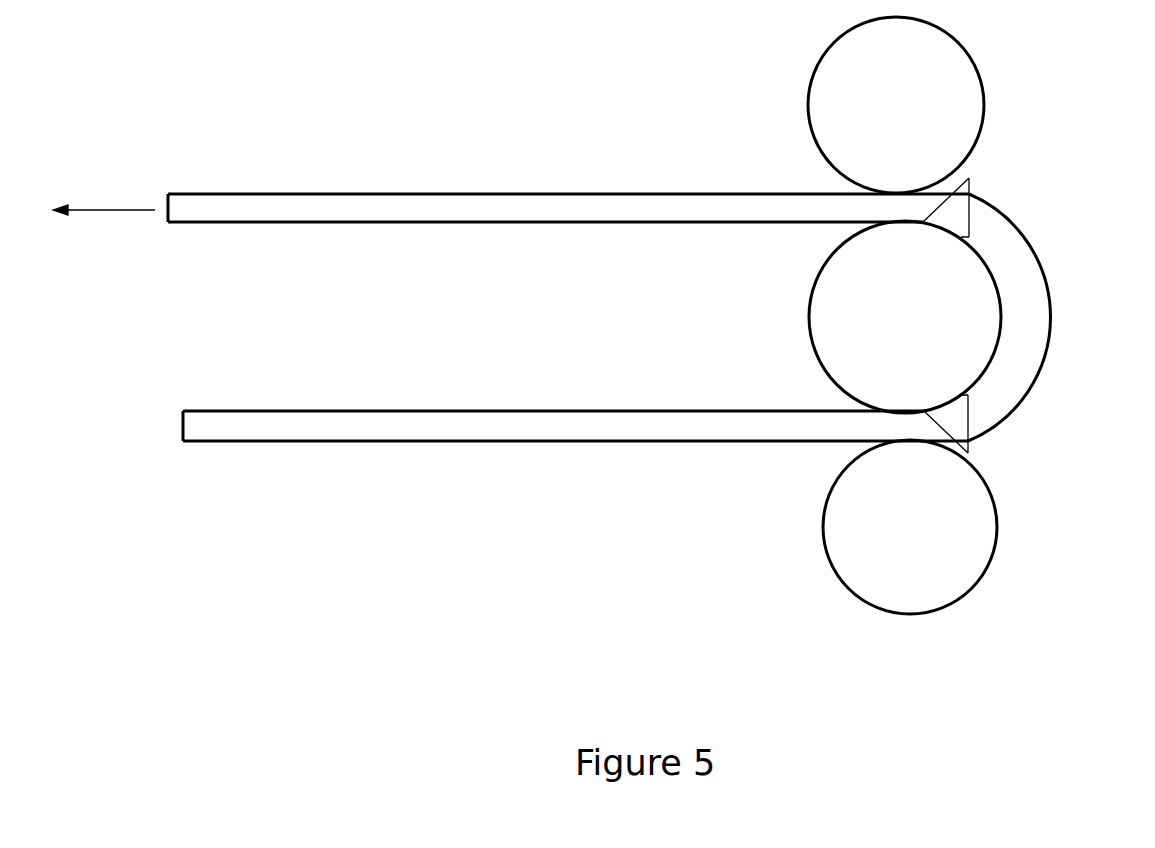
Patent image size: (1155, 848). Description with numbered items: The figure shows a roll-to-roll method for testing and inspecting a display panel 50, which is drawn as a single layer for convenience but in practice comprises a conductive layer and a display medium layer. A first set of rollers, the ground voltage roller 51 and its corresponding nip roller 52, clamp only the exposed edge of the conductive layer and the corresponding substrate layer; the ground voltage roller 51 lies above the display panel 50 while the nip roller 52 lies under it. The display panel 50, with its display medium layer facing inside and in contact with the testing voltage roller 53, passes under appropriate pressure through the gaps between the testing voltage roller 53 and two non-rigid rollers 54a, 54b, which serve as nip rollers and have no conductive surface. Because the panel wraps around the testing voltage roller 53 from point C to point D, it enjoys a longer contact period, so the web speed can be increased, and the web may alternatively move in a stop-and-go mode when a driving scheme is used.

The display panel 50 is at (575, 487).
The ground voltage roller 51 is at (554, 381).
The nip roller 52 is at (575, 468).
The testing voltage roller 53 is at (905, 317).
The non-rigid roller 54a is at (896, 105).
The non-rigid roller 54b is at (910, 527).
The point D is at (897, 207).
The point C is at (912, 425).